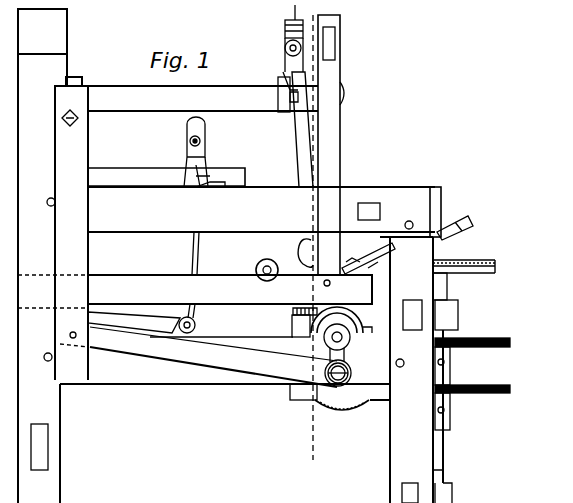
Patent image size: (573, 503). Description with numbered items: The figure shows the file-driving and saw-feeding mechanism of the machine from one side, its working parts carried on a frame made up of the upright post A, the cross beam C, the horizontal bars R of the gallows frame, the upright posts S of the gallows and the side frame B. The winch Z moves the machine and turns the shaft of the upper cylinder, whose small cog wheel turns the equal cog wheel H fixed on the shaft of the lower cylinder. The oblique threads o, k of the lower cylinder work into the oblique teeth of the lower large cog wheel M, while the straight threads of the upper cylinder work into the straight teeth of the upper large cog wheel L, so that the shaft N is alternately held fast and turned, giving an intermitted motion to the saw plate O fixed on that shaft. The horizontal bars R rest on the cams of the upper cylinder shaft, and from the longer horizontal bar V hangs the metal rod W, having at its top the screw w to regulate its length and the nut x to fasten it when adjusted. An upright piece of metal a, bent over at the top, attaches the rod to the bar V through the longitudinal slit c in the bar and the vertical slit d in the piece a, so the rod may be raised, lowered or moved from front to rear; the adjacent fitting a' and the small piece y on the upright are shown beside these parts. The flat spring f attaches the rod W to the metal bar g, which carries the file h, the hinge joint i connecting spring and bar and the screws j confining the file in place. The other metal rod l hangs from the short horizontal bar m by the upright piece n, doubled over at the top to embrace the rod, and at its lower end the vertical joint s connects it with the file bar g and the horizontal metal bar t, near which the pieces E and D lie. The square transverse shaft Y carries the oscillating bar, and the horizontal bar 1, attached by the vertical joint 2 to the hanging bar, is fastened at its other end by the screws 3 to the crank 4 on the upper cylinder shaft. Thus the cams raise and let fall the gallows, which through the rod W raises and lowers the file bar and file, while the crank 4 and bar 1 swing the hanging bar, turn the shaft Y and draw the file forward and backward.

The frame post A is at (42, 256).
The winch Z is at (53, 228).
The diamond bearing y is at (71, 114).
The longer horizontal bar V is at (203, 98).
The short horizontal bar m is at (166, 177).
The upright piece of metal n is at (196, 152).
The oblique threads of the lower cylinder o is at (190, 141).
The oblique threads of the lower cylinder k is at (210, 176).
The cross beam C is at (264, 212).
The horizontal bars of the gallows frame R is at (230, 289).
The square transverse shaft Y is at (225, 443).
The cog wheel H is at (307, 247).
The upright posts S is at (331, 145).
The metal rod W is at (298, 129).
The screw w is at (289, 37).
The nut x is at (285, 48).
The vertical slit d is at (283, 74).
The longitudinal slit c is at (277, 94).
The stud a' is at (290, 91).
The metal rod l is at (194, 275).
The upright piece of metal a is at (267, 270).
The flat spring f is at (298, 253).
The metal bar g is at (368, 254).
The hinge joint i is at (353, 253).
The file h is at (373, 271).
The screws j is at (458, 228).
The saw plate O is at (495, 267).
The side frame B is at (435, 370).
The upper large cog wheel L is at (476, 345).
The lower large cog wheel M is at (480, 391).
The shaft N is at (445, 475).
The horizontal metal bar t is at (134, 322).
The vertical joint s is at (192, 328).
The horizontal bar 1 is at (213, 357).
The vertical joint 2 is at (77, 341).
The block E is at (300, 322).
The arch D is at (342, 320).
The crank 4 is at (337, 344).
The screw 3 is at (360, 373).